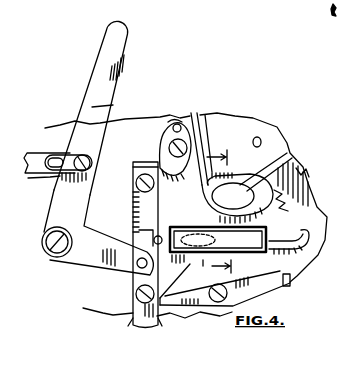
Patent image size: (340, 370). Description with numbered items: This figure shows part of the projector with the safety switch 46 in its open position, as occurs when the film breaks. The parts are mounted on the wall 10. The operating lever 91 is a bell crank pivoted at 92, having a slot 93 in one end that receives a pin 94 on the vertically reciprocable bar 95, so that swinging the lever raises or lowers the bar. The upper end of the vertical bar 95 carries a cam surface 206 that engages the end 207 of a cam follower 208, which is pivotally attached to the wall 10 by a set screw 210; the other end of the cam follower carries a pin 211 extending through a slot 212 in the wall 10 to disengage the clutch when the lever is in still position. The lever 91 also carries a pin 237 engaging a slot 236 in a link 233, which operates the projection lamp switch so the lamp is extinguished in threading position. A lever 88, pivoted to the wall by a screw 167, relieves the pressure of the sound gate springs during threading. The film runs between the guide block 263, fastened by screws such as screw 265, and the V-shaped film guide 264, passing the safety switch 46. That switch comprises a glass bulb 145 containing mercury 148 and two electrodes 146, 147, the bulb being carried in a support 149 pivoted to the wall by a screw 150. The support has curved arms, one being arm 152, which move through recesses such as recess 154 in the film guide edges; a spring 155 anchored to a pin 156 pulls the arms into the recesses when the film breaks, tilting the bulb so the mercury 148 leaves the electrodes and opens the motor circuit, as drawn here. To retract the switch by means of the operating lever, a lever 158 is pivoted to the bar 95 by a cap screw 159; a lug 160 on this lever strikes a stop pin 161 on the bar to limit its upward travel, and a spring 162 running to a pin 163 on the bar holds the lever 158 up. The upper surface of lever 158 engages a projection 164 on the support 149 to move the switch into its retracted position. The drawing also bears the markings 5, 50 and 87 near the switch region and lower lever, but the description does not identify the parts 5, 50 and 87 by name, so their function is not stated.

The operating lever 91 is at (110, 48).
The slot 236 is at (57, 160).
The pin 237 is at (89, 151).
The link 233 is at (45, 178).
The pivot 92 is at (58, 259).
The slot 93 is at (118, 257).
The pin 94 is at (132, 266).
The end of cam follower 207 is at (133, 165).
The cam surface 206 is at (132, 201).
The pin 163 is at (138, 230).
The spring 162 is at (149, 244).
The set screw 210 is at (172, 148).
The cam follower 208 is at (173, 129).
The slot 212 is at (173, 126).
The pin 211 is at (178, 124).
The wall 10 is at (134, 135).
The V-shaped film guide 264 is at (198, 113).
The recess 154 is at (207, 195).
The guide block 263 is at (225, 143).
The screw 265 is at (229, 150).
The dimension 5 is at (218, 204).
The plate 50 is at (266, 143).
The curved arm 152 is at (250, 180).
The spring 155 is at (294, 186).
The pin 156 is at (299, 182).
The support 149 is at (284, 241).
The glass bulb 145 is at (212, 228).
The mercury 148 is at (172, 216).
The screw 150 is at (198, 238).
The electrode 146 is at (245, 236).
The projection 164 is at (210, 260).
The safety switch 46 is at (230, 265).
The electrode 147 is at (256, 253).
The lever 158 is at (225, 285).
The stop 87 is at (292, 281).
The screw 167 is at (249, 301).
The cap screw 159 is at (136, 296).
The lug 160 is at (143, 307).
The vertical bar 95 is at (133, 318).
The stop pin 161 is at (153, 327).
The lever 88 is at (205, 318).